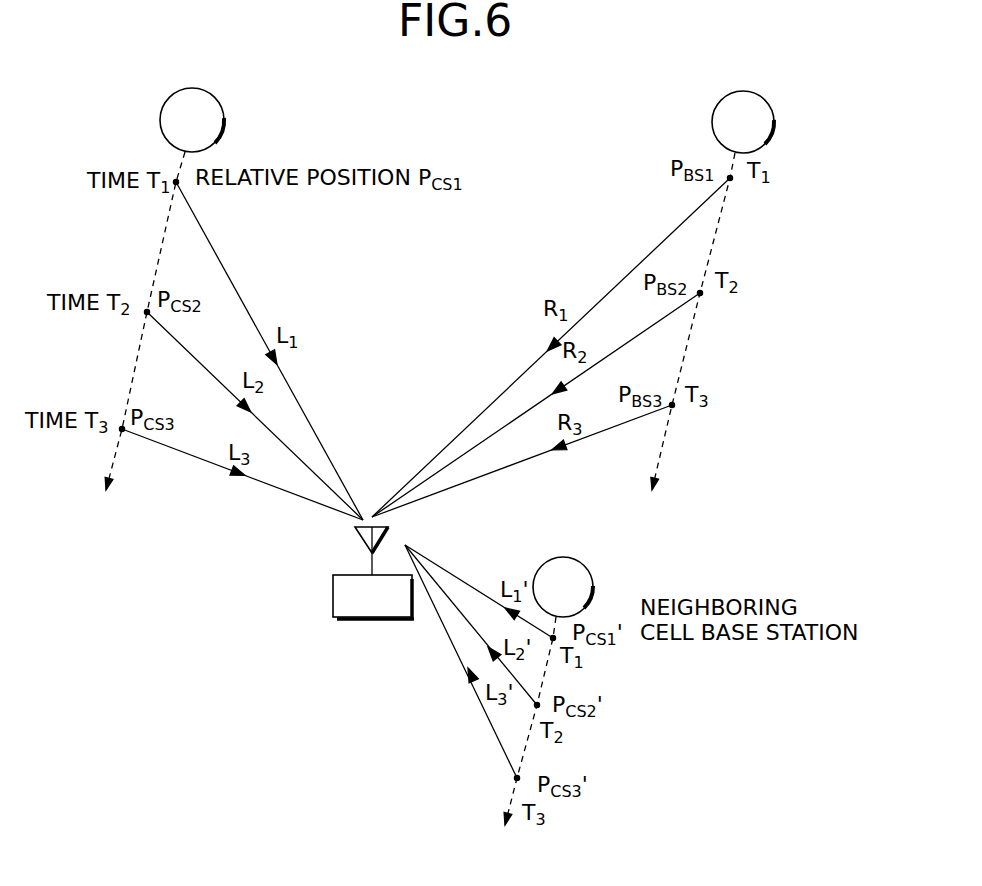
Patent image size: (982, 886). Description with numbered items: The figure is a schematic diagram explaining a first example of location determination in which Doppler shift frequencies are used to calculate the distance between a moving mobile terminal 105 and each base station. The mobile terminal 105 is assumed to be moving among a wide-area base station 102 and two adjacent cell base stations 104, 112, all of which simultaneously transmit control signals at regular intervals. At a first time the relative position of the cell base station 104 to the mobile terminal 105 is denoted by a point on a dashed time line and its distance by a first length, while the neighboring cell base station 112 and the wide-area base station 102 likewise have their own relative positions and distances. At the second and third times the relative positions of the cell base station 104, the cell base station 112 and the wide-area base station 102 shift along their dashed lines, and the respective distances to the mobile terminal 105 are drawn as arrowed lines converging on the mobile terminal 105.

The wide-area base station 102 is at (712, 122).
The cell base station 104 is at (225, 128).
The mobile terminal 105 is at (365, 620).
The cell base station 112 is at (594, 578).